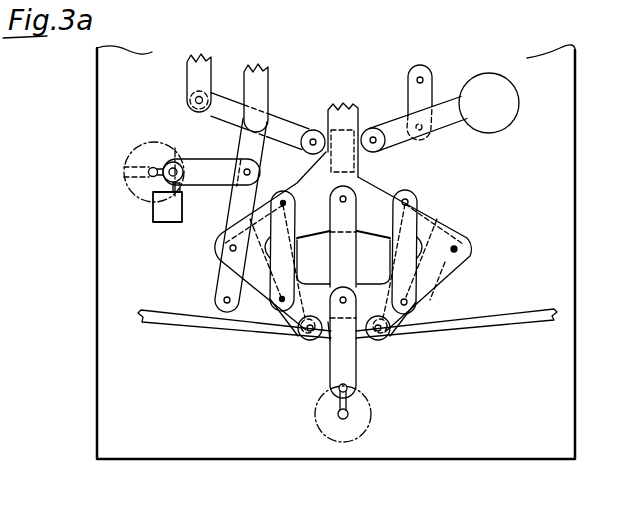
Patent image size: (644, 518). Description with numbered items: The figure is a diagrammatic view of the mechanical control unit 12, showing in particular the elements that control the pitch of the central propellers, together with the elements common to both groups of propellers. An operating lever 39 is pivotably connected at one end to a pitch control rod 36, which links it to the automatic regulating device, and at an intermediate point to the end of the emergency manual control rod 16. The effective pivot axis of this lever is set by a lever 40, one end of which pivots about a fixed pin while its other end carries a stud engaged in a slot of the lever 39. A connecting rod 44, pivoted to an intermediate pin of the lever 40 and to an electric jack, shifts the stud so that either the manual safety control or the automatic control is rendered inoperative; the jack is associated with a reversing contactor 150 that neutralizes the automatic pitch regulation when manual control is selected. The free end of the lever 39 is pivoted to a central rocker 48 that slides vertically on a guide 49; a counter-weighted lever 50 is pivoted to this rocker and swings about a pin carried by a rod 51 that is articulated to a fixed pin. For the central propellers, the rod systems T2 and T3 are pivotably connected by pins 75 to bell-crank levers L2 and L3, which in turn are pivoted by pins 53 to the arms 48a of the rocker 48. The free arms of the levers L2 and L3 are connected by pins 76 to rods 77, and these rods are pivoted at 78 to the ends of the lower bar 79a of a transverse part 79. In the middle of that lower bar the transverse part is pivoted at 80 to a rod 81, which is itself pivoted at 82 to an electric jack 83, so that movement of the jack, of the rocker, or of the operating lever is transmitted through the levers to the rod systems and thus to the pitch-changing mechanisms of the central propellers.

The mechanical control unit 12 is at (233, 436).
The emergency manual control rod 16 is at (256, 80).
The pitch control rod 36 is at (195, 75).
The operating lever 39 is at (285, 128).
The lever 40 is at (238, 202).
The connecting rod 44 is at (213, 172).
The central rocker 48 is at (359, 125).
The arms of the rocker 48a is at (338, 242).
The guide 49 is at (340, 115).
The lever 50 is at (445, 113).
The rod 51 is at (420, 97).
The pins 53 is at (230, 247).
The pins 75 is at (294, 343).
The pins 76 is at (283, 201).
The rods 77 is at (285, 257).
The pivot connections 78 is at (270, 308).
The transverse part 79 is at (347, 223).
The lower bar 79a is at (326, 335).
The pivot connection 80 is at (343, 298).
The rod 81 is at (345, 340).
The pivot connection 82 is at (352, 387).
The electric jack 83 is at (362, 418).
The reversing contactor 150 is at (158, 207).
The bell-crank lever L2 is at (219, 215).
The bell-crank lever L3 is at (433, 265).
The rod system T2 is at (198, 320).
The rod system T3 is at (492, 320).